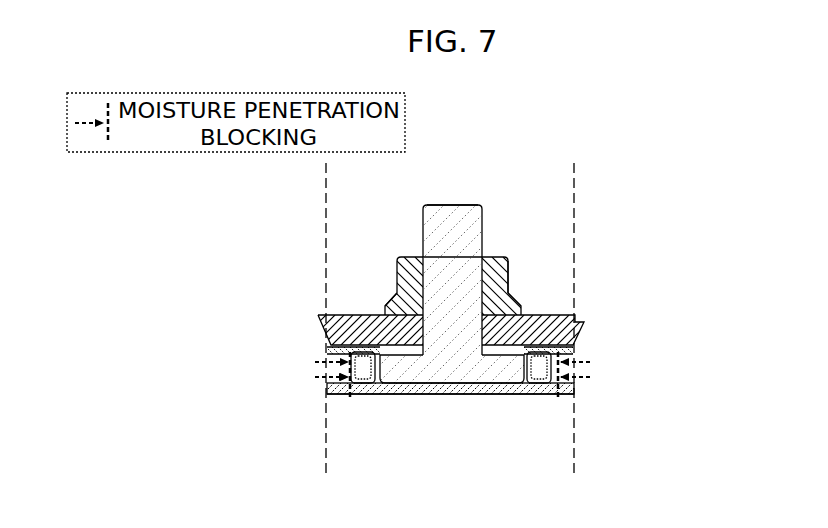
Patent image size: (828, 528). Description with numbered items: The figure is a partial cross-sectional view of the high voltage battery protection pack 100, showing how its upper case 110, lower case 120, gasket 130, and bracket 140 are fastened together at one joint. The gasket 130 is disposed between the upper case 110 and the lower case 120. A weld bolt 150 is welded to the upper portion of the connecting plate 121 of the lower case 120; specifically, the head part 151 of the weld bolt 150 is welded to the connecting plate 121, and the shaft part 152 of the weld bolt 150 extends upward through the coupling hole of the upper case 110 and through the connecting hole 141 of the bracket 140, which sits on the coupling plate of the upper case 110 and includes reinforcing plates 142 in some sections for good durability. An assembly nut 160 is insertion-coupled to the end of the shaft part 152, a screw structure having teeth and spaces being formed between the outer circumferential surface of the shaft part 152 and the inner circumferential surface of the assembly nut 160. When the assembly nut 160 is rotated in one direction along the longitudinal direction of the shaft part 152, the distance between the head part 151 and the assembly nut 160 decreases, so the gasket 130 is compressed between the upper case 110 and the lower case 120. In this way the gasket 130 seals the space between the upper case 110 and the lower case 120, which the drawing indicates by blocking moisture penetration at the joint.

The high voltage battery protection pack 100 is at (472, 115).
The upper case 110 is at (325, 351).
The lower case 120 is at (485, 400).
The connecting plate 121 is at (399, 394).
The gasket 130 is at (367, 373).
The bracket 140 is at (558, 338).
The connecting hole 141 is at (505, 300).
The reinforcing plate 142 is at (524, 314).
The weld bolt 150 is at (457, 202).
The head part 151 is at (447, 383).
The shaft part 152 is at (473, 223).
The assembly nut 160 is at (502, 299).